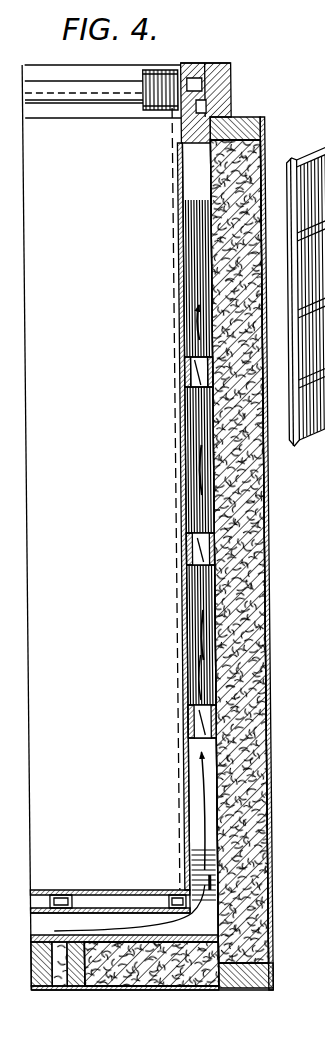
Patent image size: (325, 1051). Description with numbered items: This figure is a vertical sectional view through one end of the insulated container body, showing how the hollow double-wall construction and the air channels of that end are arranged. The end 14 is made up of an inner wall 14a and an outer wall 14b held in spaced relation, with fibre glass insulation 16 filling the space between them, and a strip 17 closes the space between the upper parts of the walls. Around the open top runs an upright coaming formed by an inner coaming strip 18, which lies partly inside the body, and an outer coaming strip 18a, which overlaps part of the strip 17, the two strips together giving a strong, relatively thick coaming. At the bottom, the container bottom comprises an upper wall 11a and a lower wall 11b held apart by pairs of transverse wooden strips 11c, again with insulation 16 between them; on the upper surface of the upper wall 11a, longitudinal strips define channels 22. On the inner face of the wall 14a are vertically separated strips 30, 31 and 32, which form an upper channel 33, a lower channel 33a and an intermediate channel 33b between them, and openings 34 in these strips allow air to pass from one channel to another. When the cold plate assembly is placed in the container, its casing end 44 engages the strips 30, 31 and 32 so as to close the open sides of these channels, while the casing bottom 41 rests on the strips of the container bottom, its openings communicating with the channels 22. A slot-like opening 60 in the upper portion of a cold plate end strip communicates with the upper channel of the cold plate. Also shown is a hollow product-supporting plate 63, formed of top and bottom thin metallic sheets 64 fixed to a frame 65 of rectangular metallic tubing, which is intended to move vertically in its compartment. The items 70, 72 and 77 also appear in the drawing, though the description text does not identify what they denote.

The supply duct 70 is at (79, 94).
The threaded coupling 72 is at (141, 105).
The inner coaming strip 18 is at (186, 124).
The outer coaming strip 18a is at (228, 66).
The end 14 is at (272, 103).
The inner wall 14a is at (135, 524).
The outer wall 14b is at (264, 492).
The strip 17 is at (300, 138).
The slot-like opening 60 is at (283, 205).
The curtain panel 77 is at (170, 190).
The upper channel 33 is at (192, 280).
The lower channel 33a is at (196, 809).
The intermediate channel 33b is at (190, 639).
The strip 30 is at (186, 376).
The strip 31 is at (186, 558).
The strip 32 is at (188, 723).
The openings 34 is at (190, 389).
The end 44 is at (181, 689).
The insulation 16 is at (236, 720).
The channels 22 is at (200, 925).
The frame 65 is at (60, 893).
The thin metallic sheets 64 is at (85, 908).
The product-supporting plate 63 is at (34, 892).
The bottom 41 is at (150, 910).
The upper wall 11a is at (103, 937).
The lower wall 11b is at (100, 1036).
The transverse wooden strips 11c is at (36, 1031).